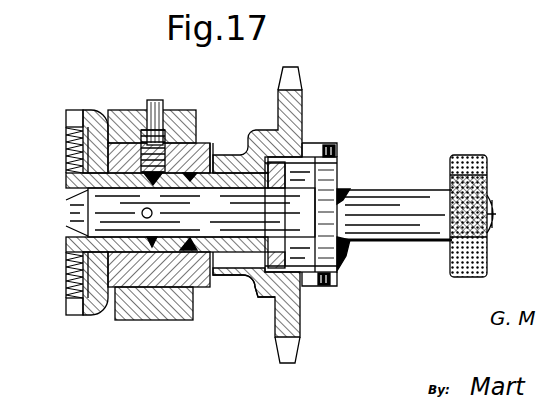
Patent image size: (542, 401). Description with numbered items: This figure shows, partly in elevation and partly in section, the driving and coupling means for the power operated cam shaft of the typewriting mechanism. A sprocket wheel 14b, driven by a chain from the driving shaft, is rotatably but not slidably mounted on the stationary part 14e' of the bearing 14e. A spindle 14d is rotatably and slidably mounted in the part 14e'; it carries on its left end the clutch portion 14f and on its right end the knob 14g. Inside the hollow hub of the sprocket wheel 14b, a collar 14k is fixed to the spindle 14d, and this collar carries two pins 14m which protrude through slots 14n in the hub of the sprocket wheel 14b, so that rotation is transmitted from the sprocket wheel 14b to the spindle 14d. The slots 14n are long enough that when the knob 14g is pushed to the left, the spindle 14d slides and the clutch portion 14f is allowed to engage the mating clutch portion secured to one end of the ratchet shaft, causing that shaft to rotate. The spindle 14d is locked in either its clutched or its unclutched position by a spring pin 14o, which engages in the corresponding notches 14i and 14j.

The clutch portion 14f is at (82, 112).
The spring pin 14o is at (155, 104).
The bearing 14e is at (165, 131).
The stationary part of bearing 14e' is at (223, 148).
The sprocket wheel 14b is at (298, 110).
The slots 14n is at (316, 149).
The pins 14m is at (336, 151).
The collar 14k is at (328, 185).
The spindle 14d is at (403, 243).
The knob 14g is at (488, 253).
The notch 14j is at (213, 278).
The notch 14i is at (156, 245).